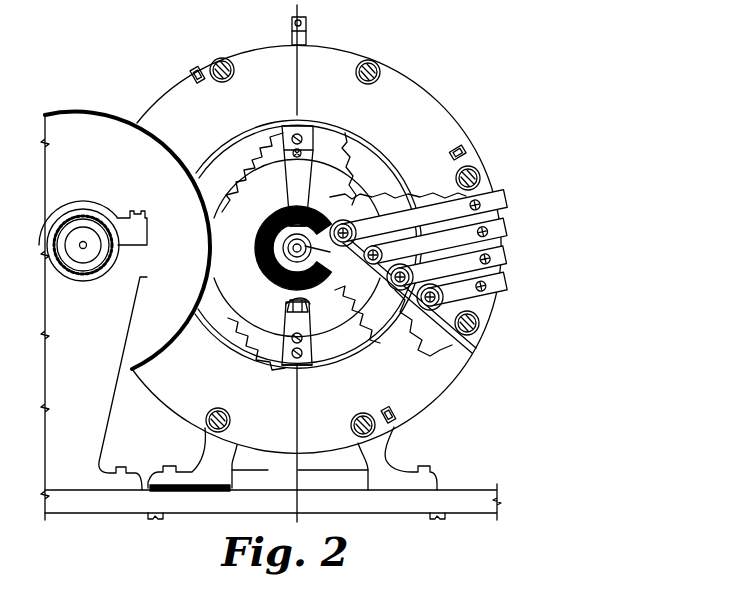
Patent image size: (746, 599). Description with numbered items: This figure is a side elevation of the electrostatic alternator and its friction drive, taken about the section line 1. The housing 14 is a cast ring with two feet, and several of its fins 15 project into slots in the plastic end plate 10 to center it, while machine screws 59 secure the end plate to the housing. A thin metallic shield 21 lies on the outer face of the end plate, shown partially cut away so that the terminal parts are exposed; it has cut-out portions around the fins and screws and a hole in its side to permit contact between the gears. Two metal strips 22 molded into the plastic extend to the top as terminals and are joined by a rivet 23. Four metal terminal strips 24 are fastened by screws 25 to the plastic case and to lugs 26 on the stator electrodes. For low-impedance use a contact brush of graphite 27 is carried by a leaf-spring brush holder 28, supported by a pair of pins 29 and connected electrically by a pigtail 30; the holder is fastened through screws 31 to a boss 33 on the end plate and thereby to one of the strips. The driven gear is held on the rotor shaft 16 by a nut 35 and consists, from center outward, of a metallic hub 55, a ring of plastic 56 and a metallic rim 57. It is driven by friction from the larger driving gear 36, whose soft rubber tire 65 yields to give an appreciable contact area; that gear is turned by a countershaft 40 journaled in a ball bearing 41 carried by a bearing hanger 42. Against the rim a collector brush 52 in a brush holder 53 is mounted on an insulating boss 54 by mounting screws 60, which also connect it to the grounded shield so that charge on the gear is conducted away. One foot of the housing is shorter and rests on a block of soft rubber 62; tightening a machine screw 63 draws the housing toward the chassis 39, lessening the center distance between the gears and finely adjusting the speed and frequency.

The section line 1 is at (305, 267).
The end plate 10 is at (181, 432).
The housing 14 is at (300, 470).
The fins 15 is at (195, 82).
The shaft 16 is at (293, 248).
The metallic shield 21 is at (352, 312).
The metal strips 22 is at (308, 33).
The rivet 23 is at (292, 25).
The terminal strips 24 is at (508, 221).
The screws 25 is at (366, 240).
The lug 26 is at (428, 291).
The contact brush 27 is at (289, 246).
The brush holder 28 is at (298, 166).
The pins 29 is at (315, 312).
The pigtail 30 is at (345, 223).
The screws 31 is at (303, 143).
The boss 33 is at (285, 133).
The nut 35 is at (306, 250).
The driving gear 36 is at (112, 252).
The chassis 39 is at (273, 502).
The countershaft 40 is at (85, 252).
The ball bearing 41 is at (90, 213).
The bearing hanger 42 is at (109, 383).
The collector brush 52 is at (288, 302).
The brush holder 53 is at (297, 333).
The insulating boss 54 is at (283, 362).
The metallic hub 55 is at (297, 258).
The plastic ring 56 is at (258, 281).
The metallic rim 57 is at (308, 244).
The machine screws 59 is at (357, 74).
The mounting screws 60 is at (303, 338).
The rubber block 62 is at (222, 492).
The machine screw 63 is at (150, 519).
The rubber tire 65 is at (76, 112).